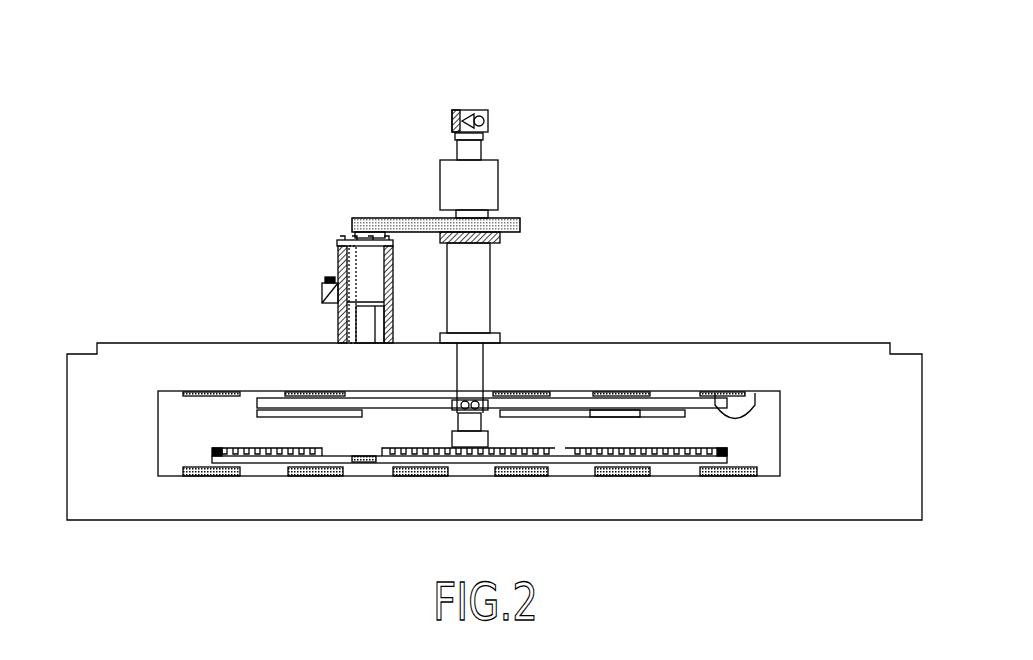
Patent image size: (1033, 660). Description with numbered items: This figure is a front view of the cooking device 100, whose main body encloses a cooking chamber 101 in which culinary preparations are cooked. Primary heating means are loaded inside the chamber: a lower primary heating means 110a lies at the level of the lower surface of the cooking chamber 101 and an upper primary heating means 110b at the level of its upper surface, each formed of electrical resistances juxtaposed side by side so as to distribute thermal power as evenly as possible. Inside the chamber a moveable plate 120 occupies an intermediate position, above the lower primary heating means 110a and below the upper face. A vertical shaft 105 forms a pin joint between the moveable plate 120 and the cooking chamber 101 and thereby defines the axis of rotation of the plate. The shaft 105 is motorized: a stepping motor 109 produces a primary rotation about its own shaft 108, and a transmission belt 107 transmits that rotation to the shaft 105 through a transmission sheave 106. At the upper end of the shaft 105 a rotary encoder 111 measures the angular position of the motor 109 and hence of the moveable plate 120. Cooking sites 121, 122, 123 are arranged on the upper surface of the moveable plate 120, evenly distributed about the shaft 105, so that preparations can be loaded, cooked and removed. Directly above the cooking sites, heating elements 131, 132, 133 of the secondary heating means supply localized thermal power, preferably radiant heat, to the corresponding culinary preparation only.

The cooking device 100 is at (710, 240).
The cooking chamber 101 is at (216, 435).
The shaft 105 is at (492, 268).
The transmission sheave 106 is at (515, 212).
The transmission belt 107 is at (523, 222).
The motor shaft 108 is at (353, 218).
The stepping motor 109 is at (338, 258).
The lower primary heating means 110a is at (748, 443).
The upper primary heating means 110b is at (755, 408).
The rotary encoder 111 is at (458, 108).
The moveable plate 120 is at (360, 462).
The cooking site 121 is at (324, 452).
The cooking site 122 is at (488, 452).
The cooking site 123 is at (616, 455).
The heating element 131 is at (278, 412).
The heating element 132 is at (505, 412).
The heating element 133 is at (680, 412).